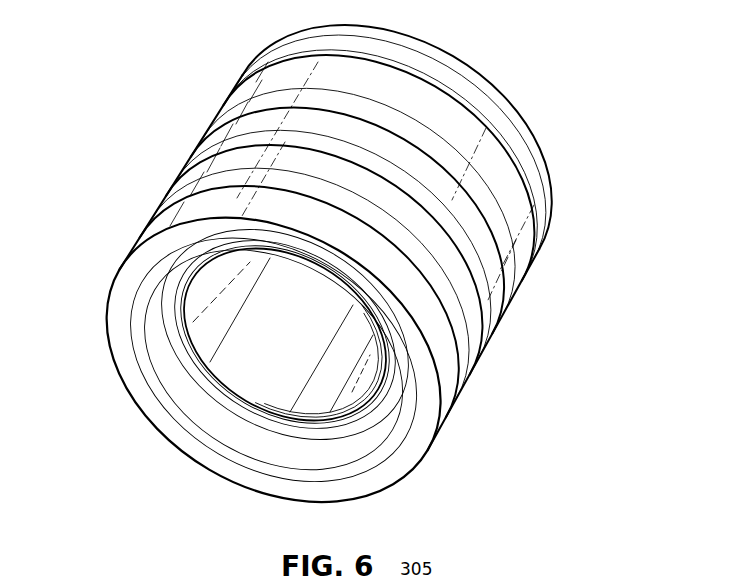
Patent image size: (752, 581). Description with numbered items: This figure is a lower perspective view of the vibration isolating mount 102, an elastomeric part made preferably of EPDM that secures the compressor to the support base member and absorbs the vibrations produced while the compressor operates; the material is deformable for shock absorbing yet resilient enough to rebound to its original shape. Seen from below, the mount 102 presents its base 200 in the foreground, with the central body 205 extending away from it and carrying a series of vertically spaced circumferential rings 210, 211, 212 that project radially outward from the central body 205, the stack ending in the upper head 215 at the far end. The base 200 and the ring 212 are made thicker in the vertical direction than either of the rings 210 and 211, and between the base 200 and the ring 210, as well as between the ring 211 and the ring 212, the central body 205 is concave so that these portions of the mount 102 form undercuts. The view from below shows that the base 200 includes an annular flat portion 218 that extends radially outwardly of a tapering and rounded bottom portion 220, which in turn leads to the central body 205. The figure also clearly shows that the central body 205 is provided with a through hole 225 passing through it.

The vibration isolating mount 102 is at (570, 80).
The base 200 is at (440, 330).
The central body 205 is at (363, 358).
The ring 210 is at (440, 268).
The ring 211 is at (480, 218).
The ring 212 is at (518, 177).
The upper head 215 is at (518, 115).
The annular flat portion 218 is at (417, 448).
The bottom portion 220 is at (196, 398).
The through hole 225 is at (221, 316).